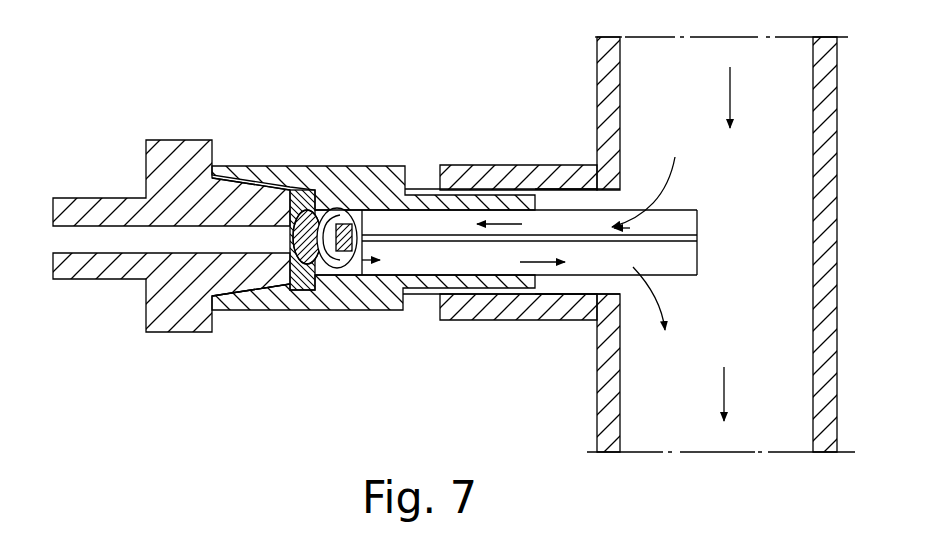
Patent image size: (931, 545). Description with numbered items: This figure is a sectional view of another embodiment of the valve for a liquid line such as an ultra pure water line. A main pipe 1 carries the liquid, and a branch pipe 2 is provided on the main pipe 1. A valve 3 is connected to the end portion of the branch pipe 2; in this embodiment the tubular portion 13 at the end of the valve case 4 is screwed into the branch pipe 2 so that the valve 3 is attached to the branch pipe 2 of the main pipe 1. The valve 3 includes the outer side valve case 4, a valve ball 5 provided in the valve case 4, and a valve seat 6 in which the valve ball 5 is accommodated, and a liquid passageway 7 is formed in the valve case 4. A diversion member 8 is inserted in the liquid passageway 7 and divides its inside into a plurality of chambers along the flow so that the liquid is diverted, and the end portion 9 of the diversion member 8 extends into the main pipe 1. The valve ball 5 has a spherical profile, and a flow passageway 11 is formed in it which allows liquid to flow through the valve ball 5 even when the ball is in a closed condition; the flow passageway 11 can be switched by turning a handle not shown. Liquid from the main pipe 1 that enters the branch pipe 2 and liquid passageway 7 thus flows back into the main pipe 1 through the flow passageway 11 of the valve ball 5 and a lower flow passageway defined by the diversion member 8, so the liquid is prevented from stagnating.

The main pipe 1 is at (608, 62).
The branch pipe 2 is at (493, 172).
The valve 3 is at (325, 160).
The valve case 4 is at (177, 158).
The valve ball 5 is at (300, 290).
The valve seat 6 is at (298, 195).
The liquid passageway 7 is at (372, 208).
The diversion member 8 is at (483, 258).
The end portion 9 is at (690, 223).
The flow passageway 11 is at (340, 208).
The tubular portion 13 is at (520, 200).